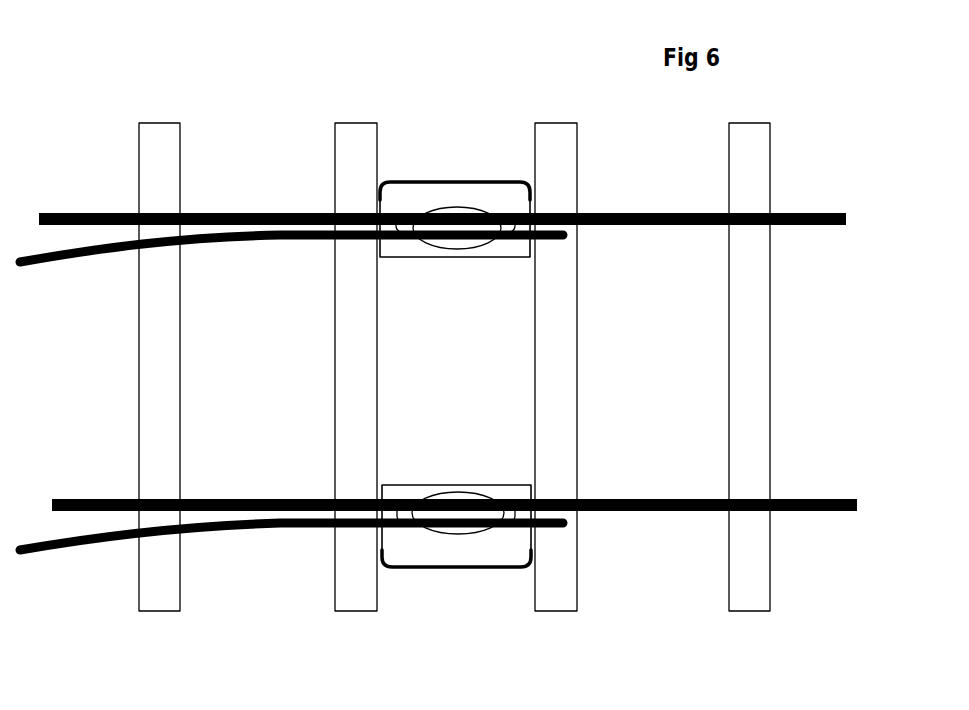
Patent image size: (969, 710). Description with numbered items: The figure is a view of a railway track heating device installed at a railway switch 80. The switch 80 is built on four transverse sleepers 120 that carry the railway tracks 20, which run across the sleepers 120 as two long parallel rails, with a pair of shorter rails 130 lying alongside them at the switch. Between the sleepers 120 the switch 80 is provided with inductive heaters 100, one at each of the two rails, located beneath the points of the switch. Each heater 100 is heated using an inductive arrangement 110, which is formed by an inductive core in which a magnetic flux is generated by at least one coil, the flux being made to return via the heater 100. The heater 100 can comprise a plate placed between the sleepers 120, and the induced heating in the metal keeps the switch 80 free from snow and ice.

The railway switch 80 is at (158, 38).
The sleepers 120 is at (362, 123).
The railway tracks 20 is at (228, 212).
The guard rail / check rail 130 is at (288, 245).
The inductive heater 100 is at (421, 556).
The inductive arrangement 110 is at (467, 245).